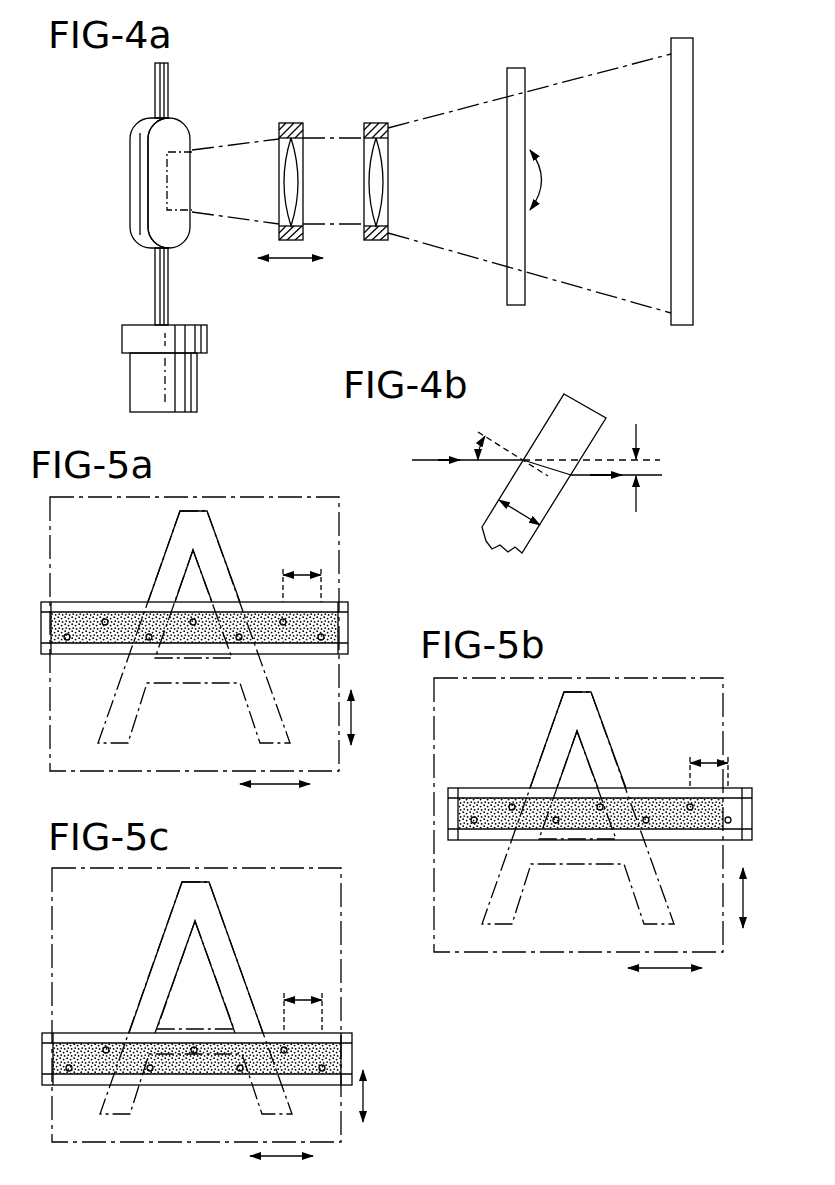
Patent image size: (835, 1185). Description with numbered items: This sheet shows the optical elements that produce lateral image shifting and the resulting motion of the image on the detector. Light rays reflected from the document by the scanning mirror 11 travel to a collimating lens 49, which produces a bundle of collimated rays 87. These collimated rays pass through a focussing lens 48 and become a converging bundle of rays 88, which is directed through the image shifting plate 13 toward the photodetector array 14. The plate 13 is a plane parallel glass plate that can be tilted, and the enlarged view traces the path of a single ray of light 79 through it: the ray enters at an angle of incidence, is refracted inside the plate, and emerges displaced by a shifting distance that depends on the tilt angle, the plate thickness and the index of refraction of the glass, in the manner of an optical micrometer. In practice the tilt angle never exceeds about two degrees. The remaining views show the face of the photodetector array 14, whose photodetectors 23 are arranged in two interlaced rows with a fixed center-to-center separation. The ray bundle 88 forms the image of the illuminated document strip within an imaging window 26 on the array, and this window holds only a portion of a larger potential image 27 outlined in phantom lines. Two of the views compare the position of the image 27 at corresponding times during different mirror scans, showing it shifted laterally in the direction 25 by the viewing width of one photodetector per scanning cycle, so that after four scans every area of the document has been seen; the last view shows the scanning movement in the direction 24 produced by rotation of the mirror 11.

In FIG. 4A, the scanning mirror 11 is at (175, 132).
In FIG. 4A, the collimating lens 49 is at (290, 123).
In FIG. 4A, the focussing lens 48 is at (378, 123).
In FIG. 4A, the converging bundle of rays 88 is at (458, 140).
In FIG. 4A, the bundle of collimated rays 87 is at (331, 200).
In FIG. 4A, the image shifting plate 13 is at (519, 80).
In FIG. 4B, the image shifting plate 13 is at (541, 503).
In FIG. 4A, the photodetector array 14 is at (679, 44).
In FIG. 5A, the photodetector array 14 is at (220, 603).
In FIG. 5B, the photodetector array 14 is at (605, 789).
In FIG. 5C, the photodetector array 14 is at (215, 1030).
In FIG. 4B, the ray of light 79 is at (430, 460).
In FIG. 5A, the photodetectors 23 is at (168, 605).
In FIG. 5B, the photodetectors 23 is at (562, 789).
In FIG. 5C, the photodetectors 23 is at (169, 1026).
In FIG. 5A, the imaging window 26 is at (175, 655).
In FIG. 5B, the imaging window 26 is at (557, 815).
In FIG. 5C, the imaging window 26 is at (177, 1083).
In FIG. 5A, the scanning direction 24 is at (377, 717).
In FIG. 5B, the scanning direction 24 is at (758, 886).
In FIG. 5C, the scanning direction 24 is at (389, 1096).
In FIG. 5A, the lateral shifting direction 25 is at (275, 805).
In FIG. 5B, the lateral shifting direction 25 is at (665, 990).
In FIG. 5C, the lateral shifting direction 25 is at (311, 1142).
In FIG. 5A, the potential image 27 is at (194, 654).
In FIG. 5B, the potential image 27 is at (578, 837).
In FIG. 5C, the potential image 27 is at (196, 1018).